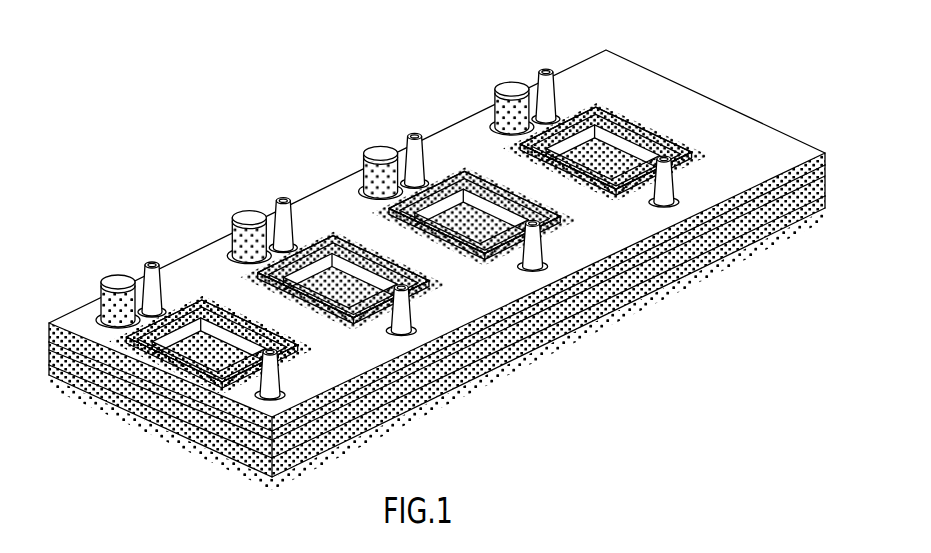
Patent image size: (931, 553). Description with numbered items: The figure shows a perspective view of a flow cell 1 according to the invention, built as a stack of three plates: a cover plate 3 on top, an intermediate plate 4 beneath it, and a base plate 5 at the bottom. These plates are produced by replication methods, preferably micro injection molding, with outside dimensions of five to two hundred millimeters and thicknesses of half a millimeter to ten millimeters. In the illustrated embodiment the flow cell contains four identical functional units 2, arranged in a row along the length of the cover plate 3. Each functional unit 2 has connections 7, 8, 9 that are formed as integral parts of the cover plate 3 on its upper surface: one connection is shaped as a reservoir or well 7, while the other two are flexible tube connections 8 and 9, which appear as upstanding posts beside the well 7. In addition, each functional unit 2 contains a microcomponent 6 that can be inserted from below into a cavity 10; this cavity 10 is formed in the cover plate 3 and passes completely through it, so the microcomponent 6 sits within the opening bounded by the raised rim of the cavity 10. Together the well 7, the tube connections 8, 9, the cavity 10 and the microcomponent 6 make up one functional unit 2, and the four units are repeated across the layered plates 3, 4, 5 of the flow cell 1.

The multilayer substrate assembly 1 is at (437, 245).
The functional unit 2 is at (572, 168).
The cover plate 3 is at (718, 145).
The intermediate plate 4 is at (787, 203).
The base plate 5 is at (145, 410).
The microcomponent 6 is at (607, 137).
The reservoir or well 7 is at (107, 299).
The flexible tube connection 8 is at (153, 262).
The flexible tube connection 9 is at (267, 370).
The cavity 10 is at (633, 187).